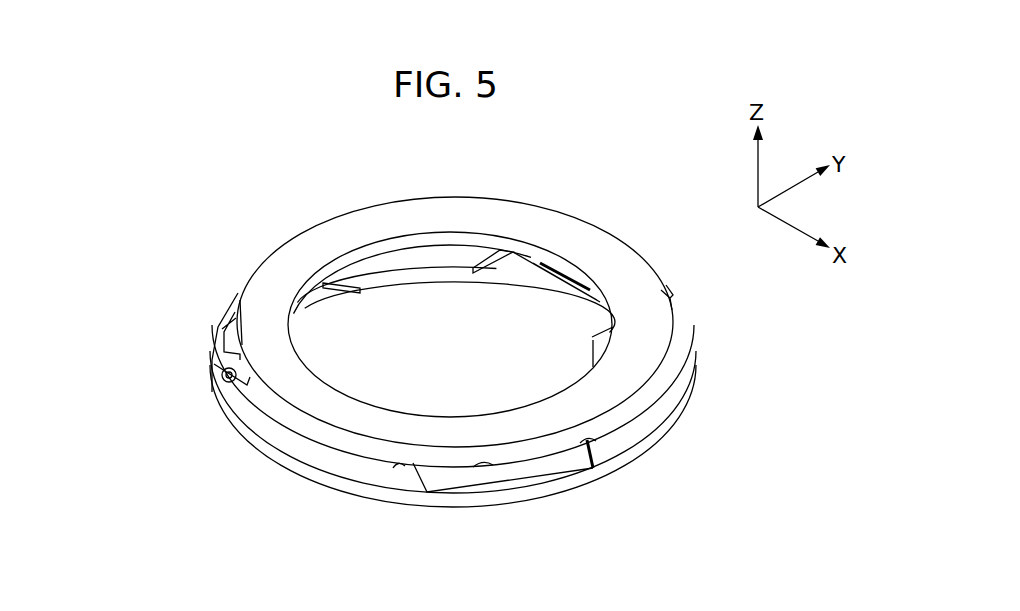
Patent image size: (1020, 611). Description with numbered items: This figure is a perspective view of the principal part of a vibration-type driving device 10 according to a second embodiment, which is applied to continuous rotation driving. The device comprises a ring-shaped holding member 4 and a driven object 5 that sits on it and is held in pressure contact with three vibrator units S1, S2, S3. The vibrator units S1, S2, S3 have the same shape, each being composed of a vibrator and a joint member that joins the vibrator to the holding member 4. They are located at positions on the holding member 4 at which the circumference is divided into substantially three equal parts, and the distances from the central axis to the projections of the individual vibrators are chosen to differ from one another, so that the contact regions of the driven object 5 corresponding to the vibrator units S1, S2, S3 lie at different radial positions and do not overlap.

The vibration-type driving device 10 is at (596, 163).
The driven object 5 is at (652, 332).
The holding member 4 is at (657, 403).
The vibrator unit S1 is at (660, 292).
The vibrator unit S2 is at (515, 477).
The vibrator unit S3 is at (222, 326).